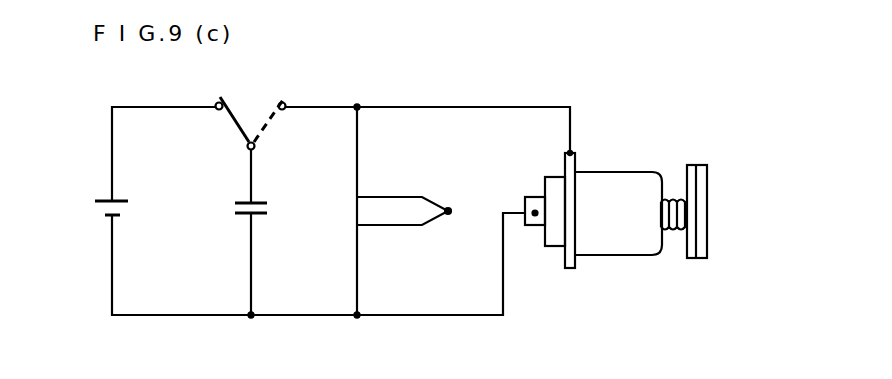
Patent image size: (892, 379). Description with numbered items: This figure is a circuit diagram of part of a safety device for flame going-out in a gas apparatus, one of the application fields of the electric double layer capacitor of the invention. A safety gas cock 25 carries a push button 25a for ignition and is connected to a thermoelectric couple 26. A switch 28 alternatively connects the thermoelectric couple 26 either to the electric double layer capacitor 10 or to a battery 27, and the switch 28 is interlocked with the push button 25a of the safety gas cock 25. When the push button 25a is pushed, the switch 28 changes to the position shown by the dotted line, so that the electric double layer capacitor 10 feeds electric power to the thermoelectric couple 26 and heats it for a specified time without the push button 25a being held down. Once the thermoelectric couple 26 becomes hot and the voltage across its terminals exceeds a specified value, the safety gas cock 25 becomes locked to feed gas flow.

The battery 27 is at (96, 207).
The electric double layer capacitor 10 is at (251, 203).
The switch 28 is at (251, 108).
The thermoelectric couple 26 is at (436, 206).
The safety gas cock 25 is at (628, 172).
The push button 25a is at (708, 200).